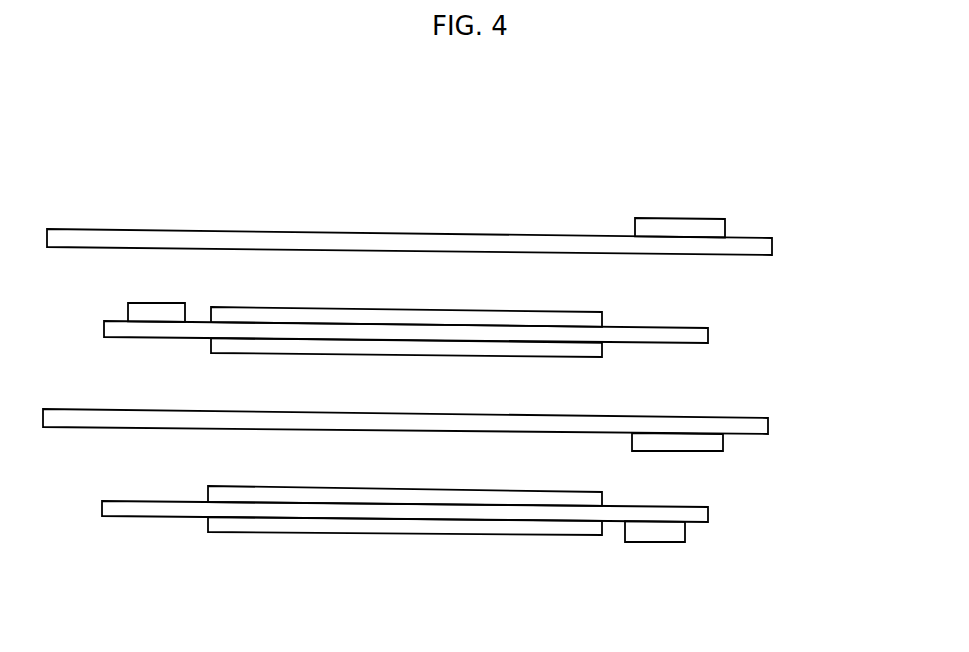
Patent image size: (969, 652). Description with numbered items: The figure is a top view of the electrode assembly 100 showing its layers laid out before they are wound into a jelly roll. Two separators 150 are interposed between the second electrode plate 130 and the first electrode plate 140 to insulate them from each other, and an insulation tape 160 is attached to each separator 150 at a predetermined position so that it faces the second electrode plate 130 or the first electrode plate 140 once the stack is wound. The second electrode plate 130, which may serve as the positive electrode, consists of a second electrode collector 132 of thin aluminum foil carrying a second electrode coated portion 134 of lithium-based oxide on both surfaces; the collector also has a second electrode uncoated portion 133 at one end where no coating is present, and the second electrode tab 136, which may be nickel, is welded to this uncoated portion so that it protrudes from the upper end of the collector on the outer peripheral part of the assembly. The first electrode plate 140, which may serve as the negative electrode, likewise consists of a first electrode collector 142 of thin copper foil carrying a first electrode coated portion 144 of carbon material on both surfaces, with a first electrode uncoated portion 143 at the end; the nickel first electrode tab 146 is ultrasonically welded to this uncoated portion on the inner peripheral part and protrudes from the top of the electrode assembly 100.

The electrode assembly 100 is at (147, 164).
The second electrode plate 130 is at (447, 331).
The second electrode collector 132 is at (708, 335).
The second electrode uncoated portion 133 is at (678, 343).
The second electrode coated portion 134 is at (588, 308).
The second electrode tab 136 is at (130, 315).
The first electrode plate 140 is at (480, 528).
The first electrode collector 142 is at (708, 515).
The first electrode uncoated portion 143 is at (152, 517).
The first electrode coated portion 144 is at (585, 492).
The first electrode tab 146 is at (685, 532).
The separator 150 is at (773, 243).
The insulation tape 160 is at (723, 229).